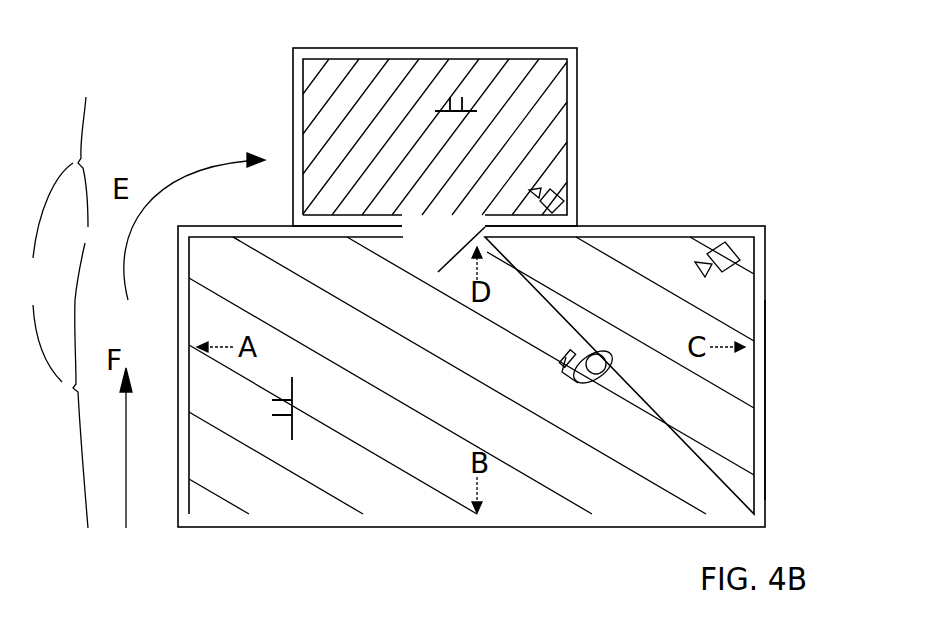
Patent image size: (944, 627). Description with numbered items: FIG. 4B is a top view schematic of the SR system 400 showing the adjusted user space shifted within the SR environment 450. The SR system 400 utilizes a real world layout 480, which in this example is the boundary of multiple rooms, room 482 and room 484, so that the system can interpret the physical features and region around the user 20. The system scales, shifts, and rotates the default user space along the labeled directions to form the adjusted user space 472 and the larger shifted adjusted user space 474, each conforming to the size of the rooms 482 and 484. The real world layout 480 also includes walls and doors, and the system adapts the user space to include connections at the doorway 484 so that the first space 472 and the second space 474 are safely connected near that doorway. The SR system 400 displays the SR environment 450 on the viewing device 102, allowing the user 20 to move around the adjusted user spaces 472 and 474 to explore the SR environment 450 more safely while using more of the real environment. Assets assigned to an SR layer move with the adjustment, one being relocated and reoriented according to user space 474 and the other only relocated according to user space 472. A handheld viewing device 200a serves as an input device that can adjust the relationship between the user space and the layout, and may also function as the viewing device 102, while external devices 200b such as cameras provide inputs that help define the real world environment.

The SR system 400 is at (99, 0).
The SR environment 450 is at (544, 87).
The adjusted user space 472 is at (238, 490).
The adjusted user space 474 is at (550, 265).
The real world layout 480 is at (50, 312).
The room 482 is at (757, 446).
The room 484 is at (574, 106).
The handheld viewing device 200a is at (552, 354).
The external device 200b is at (560, 192).
The viewing device 102 is at (607, 345).
The user 20 is at (581, 381).